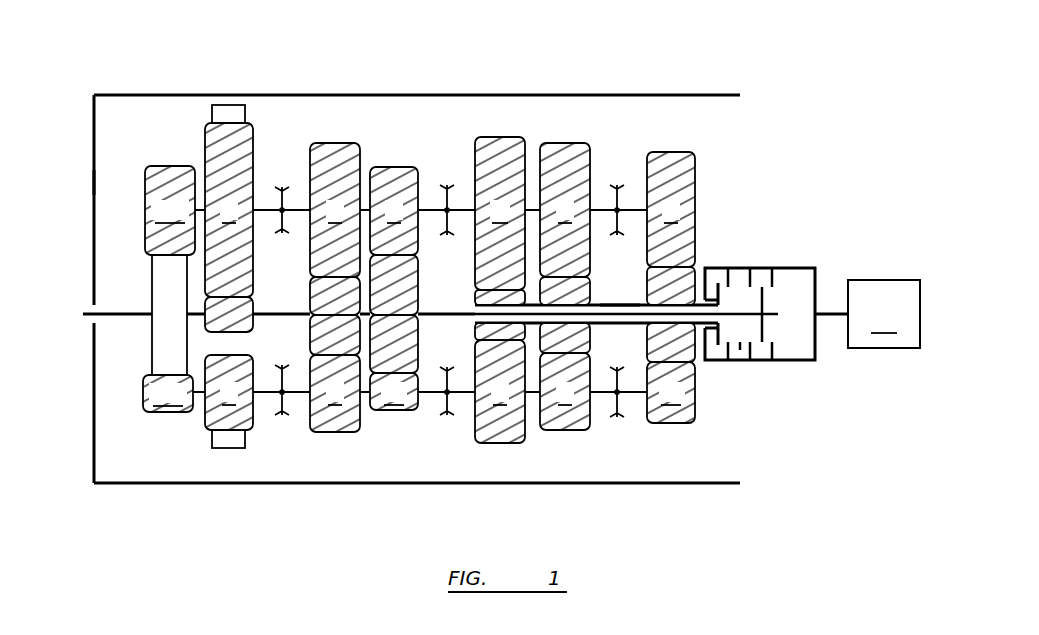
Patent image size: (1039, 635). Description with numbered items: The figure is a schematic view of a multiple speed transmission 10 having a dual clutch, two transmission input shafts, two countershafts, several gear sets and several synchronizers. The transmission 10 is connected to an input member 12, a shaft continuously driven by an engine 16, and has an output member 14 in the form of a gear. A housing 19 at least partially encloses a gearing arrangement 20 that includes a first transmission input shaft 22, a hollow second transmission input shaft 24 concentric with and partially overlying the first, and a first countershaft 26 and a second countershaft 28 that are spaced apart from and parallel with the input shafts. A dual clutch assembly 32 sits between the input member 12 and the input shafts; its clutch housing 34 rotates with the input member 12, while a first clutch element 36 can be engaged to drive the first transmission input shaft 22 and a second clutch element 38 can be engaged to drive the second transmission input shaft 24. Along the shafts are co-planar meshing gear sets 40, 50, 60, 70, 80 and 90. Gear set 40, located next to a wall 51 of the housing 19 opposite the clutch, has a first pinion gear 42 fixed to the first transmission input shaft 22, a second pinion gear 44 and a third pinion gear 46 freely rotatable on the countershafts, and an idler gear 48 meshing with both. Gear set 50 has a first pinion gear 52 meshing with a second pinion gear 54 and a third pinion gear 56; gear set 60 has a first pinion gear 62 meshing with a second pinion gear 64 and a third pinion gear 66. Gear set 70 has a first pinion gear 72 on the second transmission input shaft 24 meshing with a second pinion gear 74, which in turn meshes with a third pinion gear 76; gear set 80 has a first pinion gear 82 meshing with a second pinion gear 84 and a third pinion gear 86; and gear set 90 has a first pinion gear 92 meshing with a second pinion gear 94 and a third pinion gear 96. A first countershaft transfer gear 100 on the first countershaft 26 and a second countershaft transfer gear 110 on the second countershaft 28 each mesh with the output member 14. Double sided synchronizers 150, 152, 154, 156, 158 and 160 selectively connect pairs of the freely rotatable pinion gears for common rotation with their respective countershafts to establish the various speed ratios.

The multiple speed transmission 10 is at (824, 82).
The input member 12 is at (832, 318).
The output member 14 is at (150, 342).
The engine 16 is at (884, 314).
The housing 19 is at (133, 95).
The gearing arrangement 20 is at (202, 285).
The first transmission input shaft 22 is at (427, 311).
The second transmission input shaft 24 is at (621, 303).
The first countershaft 26 is at (535, 395).
The second countershaft 28 is at (366, 208).
The dual clutch assembly 32 is at (800, 245).
The clutch housing 34 is at (747, 266).
The first clutch element 36 is at (772, 352).
The second clutch element 38 is at (730, 352).
The co-planar gear set 40 is at (241, 472).
The first pinion gear 42 is at (253, 300).
The second pinion gear 44 is at (203, 414).
The third pinion gear 46 is at (217, 150).
The idler gear 48 is at (227, 104).
The co-planar gear set 50 is at (317, 285).
The wall 51 is at (94, 188).
The first pinion gear 52 is at (310, 281).
The second pinion gear 54 is at (310, 413).
The third pinion gear 56 is at (340, 142).
The co-planar gear set 60 is at (405, 285).
The first pinion gear 62 is at (420, 338).
The second pinion gear 64 is at (380, 411).
The third pinion gear 66 is at (396, 166).
The co-planar gear set 70 is at (482, 285).
The first pinion gear 72 is at (473, 331).
The second pinion gear 74 is at (475, 422).
The third pinion gear 76 is at (496, 136).
The co-planar gear set 80 is at (587, 285).
The first pinion gear 82 is at (588, 337).
The second pinion gear 84 is at (575, 431).
The third pinion gear 86 is at (564, 142).
The co-planar gear set 90 is at (708, 341).
The first pinion gear 92 is at (707, 353).
The second pinion gear 94 is at (695, 412).
The third pinion gear 96 is at (695, 185).
The first countershaft transfer gear 100 is at (168, 393).
The second countershaft transfer gear 110 is at (170, 210).
The synchronizer assembly 150 is at (282, 364).
The synchronizer assembly 152 is at (282, 186).
The synchronizer assembly 154 is at (447, 416).
The synchronizer assembly 156 is at (447, 184).
The synchronizer assembly 158 is at (617, 418).
The synchronizer assembly 160 is at (617, 184).